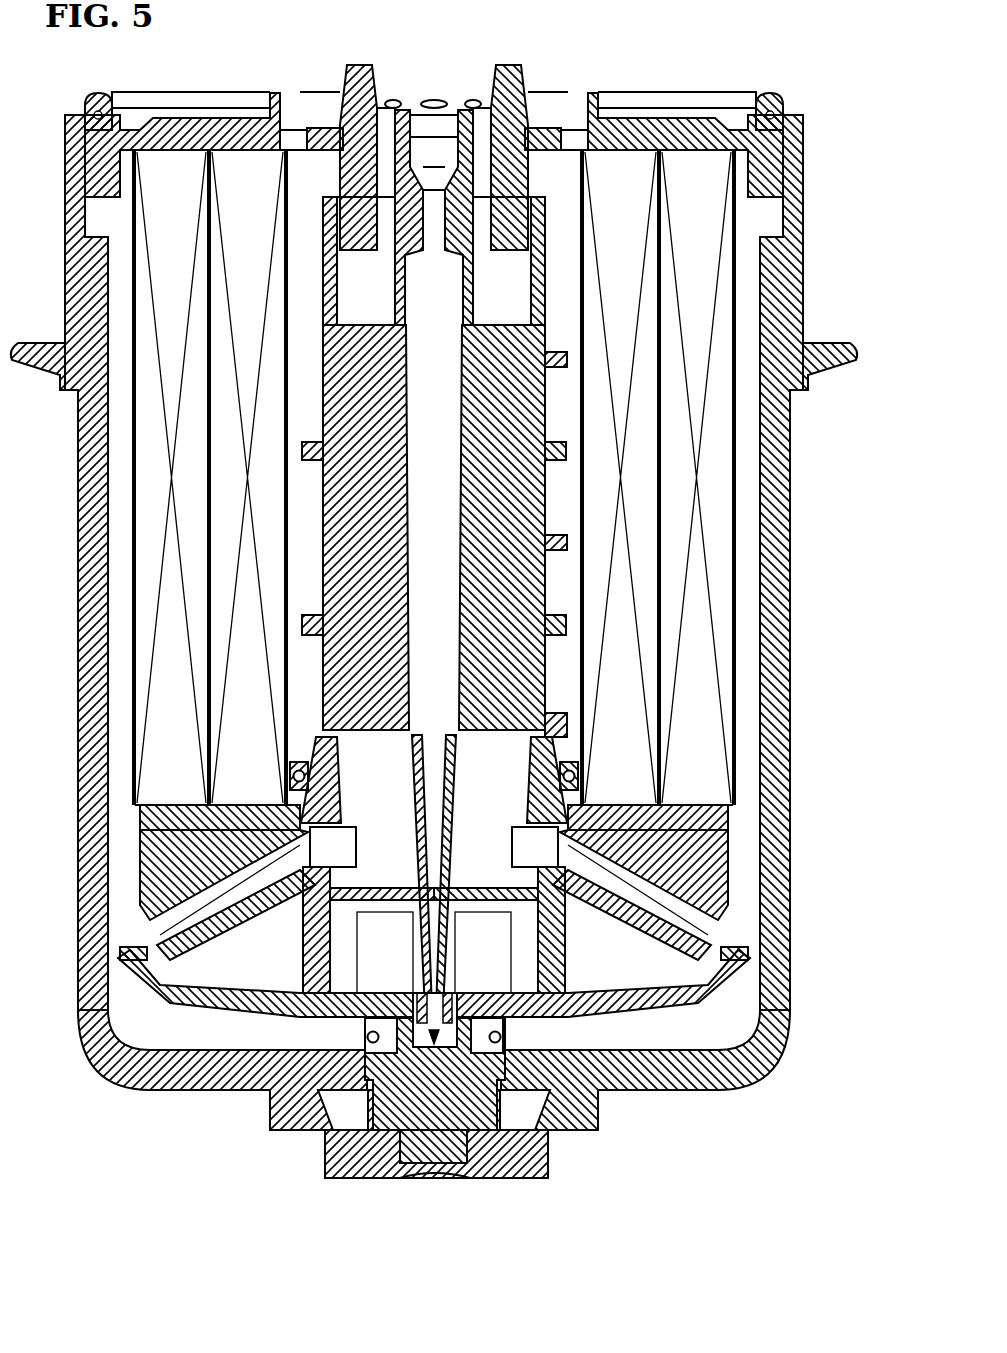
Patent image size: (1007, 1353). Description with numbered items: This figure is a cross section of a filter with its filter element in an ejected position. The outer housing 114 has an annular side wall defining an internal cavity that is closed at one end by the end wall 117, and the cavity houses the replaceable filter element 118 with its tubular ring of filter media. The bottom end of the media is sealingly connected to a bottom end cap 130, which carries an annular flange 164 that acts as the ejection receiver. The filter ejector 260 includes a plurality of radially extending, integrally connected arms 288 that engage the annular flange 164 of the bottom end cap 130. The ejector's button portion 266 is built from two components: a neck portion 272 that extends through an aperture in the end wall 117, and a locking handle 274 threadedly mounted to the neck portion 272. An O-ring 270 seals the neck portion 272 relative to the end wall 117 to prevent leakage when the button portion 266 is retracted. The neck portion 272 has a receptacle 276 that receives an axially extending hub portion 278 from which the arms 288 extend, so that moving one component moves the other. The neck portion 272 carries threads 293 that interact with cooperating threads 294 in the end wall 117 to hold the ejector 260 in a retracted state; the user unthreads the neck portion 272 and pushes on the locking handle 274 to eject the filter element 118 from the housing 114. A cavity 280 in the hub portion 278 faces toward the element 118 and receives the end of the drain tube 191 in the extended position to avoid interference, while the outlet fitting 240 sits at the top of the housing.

The outer housing 114 is at (787, 573).
The end wall 117 is at (212, 1092).
The filter element 118 is at (745, 483).
The bottom end cap 130 is at (700, 862).
The annular flange 164 is at (735, 923).
The drain tube 191 is at (460, 962).
The outlet fitting 240 is at (560, 237).
The filter ejector 260 is at (568, 1185).
The button portion 266 is at (390, 1195).
The O-ring 270 is at (368, 1037).
The neck portion 272 is at (513, 1113).
The locking handle 274 is at (506, 1150).
The receptacle 276 is at (308, 930).
The hub portion 278 is at (416, 1130).
The cavity 280 is at (312, 967).
The arms 288 is at (753, 1043).
The threads 293 is at (335, 1075).
The cooperating threads 294 is at (383, 1155).